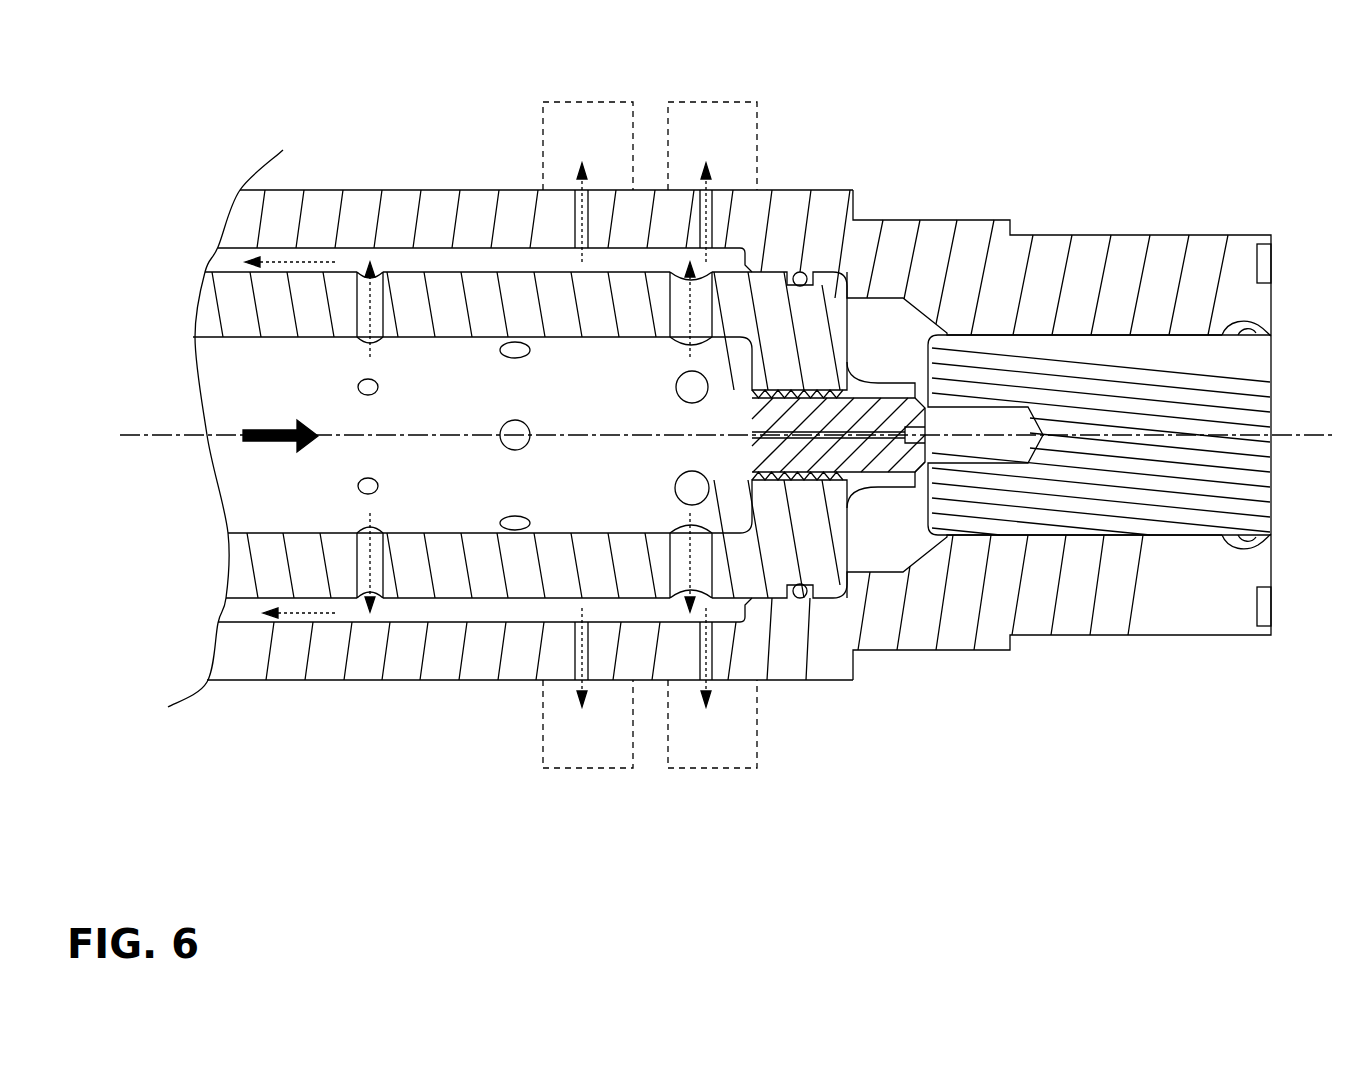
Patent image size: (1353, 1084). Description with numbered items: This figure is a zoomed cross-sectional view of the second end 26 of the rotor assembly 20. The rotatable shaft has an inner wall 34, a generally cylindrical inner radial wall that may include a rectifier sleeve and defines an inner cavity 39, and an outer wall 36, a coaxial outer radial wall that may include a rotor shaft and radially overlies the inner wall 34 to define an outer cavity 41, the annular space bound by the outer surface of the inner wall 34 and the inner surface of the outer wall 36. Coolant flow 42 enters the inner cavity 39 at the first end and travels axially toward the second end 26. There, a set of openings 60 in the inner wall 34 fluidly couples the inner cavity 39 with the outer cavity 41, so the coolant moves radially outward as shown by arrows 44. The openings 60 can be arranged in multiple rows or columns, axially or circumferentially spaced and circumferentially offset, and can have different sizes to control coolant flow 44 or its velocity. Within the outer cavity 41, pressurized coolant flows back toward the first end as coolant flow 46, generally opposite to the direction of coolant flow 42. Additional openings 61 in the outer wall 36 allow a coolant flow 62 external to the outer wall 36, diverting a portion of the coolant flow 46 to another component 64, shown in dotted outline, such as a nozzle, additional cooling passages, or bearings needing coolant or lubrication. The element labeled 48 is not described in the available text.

The rotor assembly 20 is at (263, 75).
The second end 26 is at (1068, 163).
The inner wall 34 is at (313, 302).
The outer wall 36 is at (278, 226).
The inner cavity 39 is at (318, 355).
The outer cavity 41 is at (432, 256).
The coolant flow 42 is at (270, 447).
The radially outward flow arrows 44 is at (372, 320).
The coolant flow arrow 46 is at (300, 262).
The conduit 48 is at (1298, 435).
The openings 60 is at (500, 448).
The additional openings 61 is at (577, 208).
The coolant flow 62 is at (562, 234).
The another component 64 is at (560, 102).